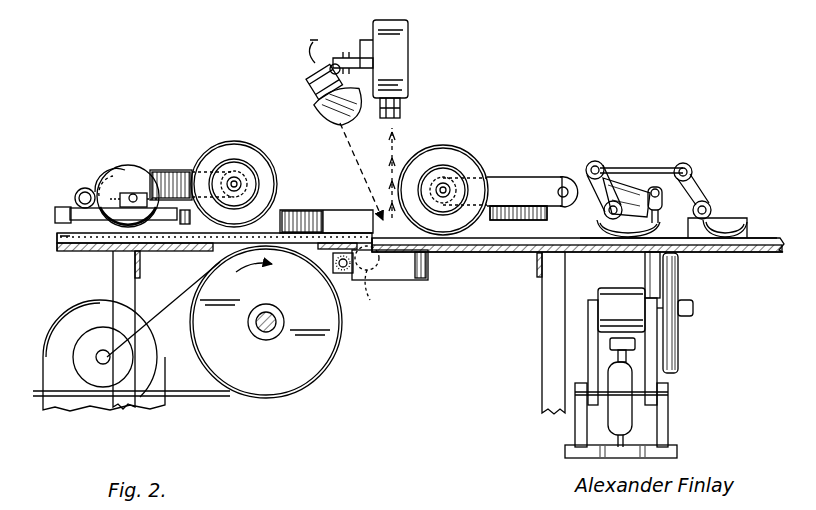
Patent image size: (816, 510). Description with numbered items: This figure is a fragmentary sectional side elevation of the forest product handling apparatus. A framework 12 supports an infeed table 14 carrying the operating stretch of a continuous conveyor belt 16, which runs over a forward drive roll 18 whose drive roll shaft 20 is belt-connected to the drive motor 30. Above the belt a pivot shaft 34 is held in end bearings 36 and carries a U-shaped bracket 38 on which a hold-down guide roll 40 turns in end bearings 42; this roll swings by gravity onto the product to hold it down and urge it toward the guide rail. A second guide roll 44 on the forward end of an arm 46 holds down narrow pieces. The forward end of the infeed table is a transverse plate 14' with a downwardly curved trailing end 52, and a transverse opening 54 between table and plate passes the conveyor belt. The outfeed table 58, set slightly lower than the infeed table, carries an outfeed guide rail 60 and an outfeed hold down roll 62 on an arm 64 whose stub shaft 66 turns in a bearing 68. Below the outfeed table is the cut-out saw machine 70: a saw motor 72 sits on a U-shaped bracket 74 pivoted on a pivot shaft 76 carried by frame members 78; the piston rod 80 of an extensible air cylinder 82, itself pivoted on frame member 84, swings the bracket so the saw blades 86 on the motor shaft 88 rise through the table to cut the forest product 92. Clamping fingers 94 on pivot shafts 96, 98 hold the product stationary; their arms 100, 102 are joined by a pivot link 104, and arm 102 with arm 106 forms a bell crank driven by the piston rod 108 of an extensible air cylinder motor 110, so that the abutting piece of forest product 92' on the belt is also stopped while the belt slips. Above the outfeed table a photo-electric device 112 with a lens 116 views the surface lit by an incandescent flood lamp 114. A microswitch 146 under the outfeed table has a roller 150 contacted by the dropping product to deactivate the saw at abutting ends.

The framework 12 is at (127, 298).
The infeed table 14 is at (401, 253).
The transverse plate 14' is at (338, 215).
The conveyor belt 16 is at (70, 238).
The drive roll 18 is at (318, 362).
The drive roll shaft 20 is at (266, 332).
The drive motor 30 is at (58, 340).
The pivot shaft 34 is at (97, 196).
The end bearings 36 is at (80, 192).
The U-shaped bracket 38 is at (82, 210).
The hold-down guide roll 40 is at (107, 188).
The end bearings 42 is at (133, 194).
The second guide roll 44 is at (234, 144).
The arm 46 is at (172, 170).
The trailing end 52 is at (322, 252).
The transverse opening 54 is at (302, 245).
The outfeed table 58 is at (491, 253).
The outfeed guide rail 60 is at (480, 240).
The outfeed hold down roll 62 is at (452, 147).
The arm 64 is at (513, 178).
The stub shaft 66 is at (558, 192).
The bearing 68 is at (562, 172).
The cut-out saw machine 70 is at (743, 170).
The saw motor 72 is at (620, 290).
The U-shaped bracket 74 is at (590, 312).
The pivot shaft 76 is at (672, 393).
The frame members 78 is at (575, 415).
The piston rod 80 is at (610, 357).
The extensible air cylinder 82 is at (630, 408).
The frame member 84 is at (565, 452).
The saw blades 86 is at (680, 355).
The motor shaft 88 is at (695, 308).
The forest product 92 is at (576, 261).
The abutting piece of forest product 92' is at (76, 261).
The clamping fingers 94 is at (747, 223).
The pivot shaft 96 is at (712, 205).
The pivot shaft 98 is at (610, 218).
The arm 100 is at (692, 185).
The arm 102 is at (607, 165).
The pivot link 104 is at (663, 168).
The arm 106 is at (643, 197).
The piston rod 108 is at (672, 205).
The extensible air cylinder motor 110 is at (652, 275).
The photo-electric device 112 is at (398, 67).
The incandescent flood lamp 114 is at (312, 110).
The lens 116 is at (402, 115).
The microswitch 146 is at (393, 273).
The roller 150 is at (366, 284).